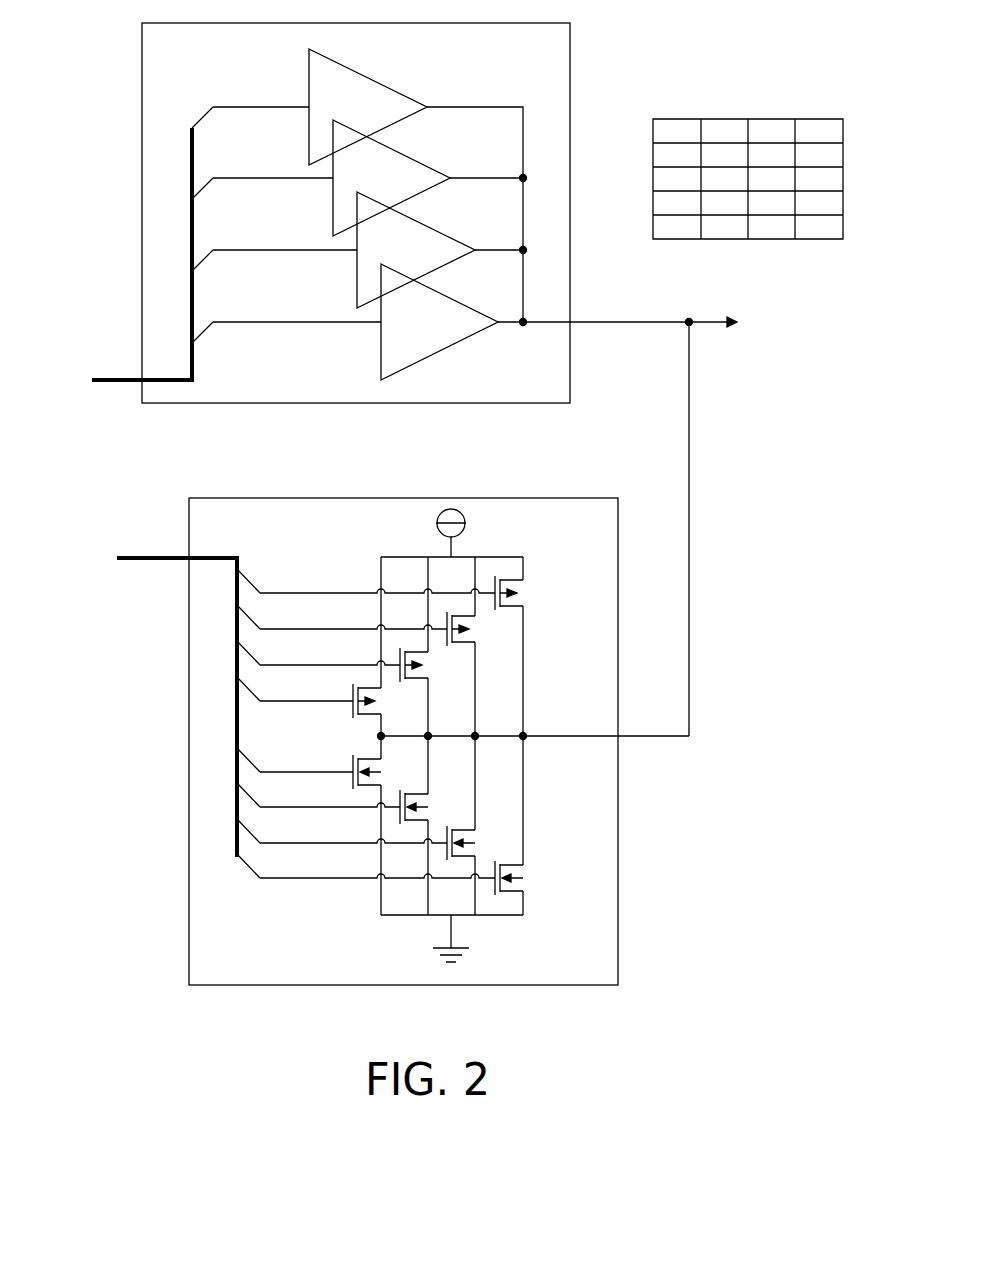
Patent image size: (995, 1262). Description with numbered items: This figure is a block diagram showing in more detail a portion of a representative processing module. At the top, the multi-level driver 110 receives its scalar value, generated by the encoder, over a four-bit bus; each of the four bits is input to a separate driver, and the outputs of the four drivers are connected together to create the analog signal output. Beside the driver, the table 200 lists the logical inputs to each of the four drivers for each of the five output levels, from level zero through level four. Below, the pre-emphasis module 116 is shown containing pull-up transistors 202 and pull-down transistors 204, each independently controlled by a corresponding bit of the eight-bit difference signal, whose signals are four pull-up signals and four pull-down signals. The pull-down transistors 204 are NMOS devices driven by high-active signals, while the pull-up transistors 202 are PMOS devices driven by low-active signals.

The multi-level driver 110 is at (142, 72).
The pre-emphasis module 116 is at (189, 522).
The table 200 is at (653, 119).
The pull-up transistors 202 is at (537, 571).
The pull-down transistors 204 is at (537, 747).